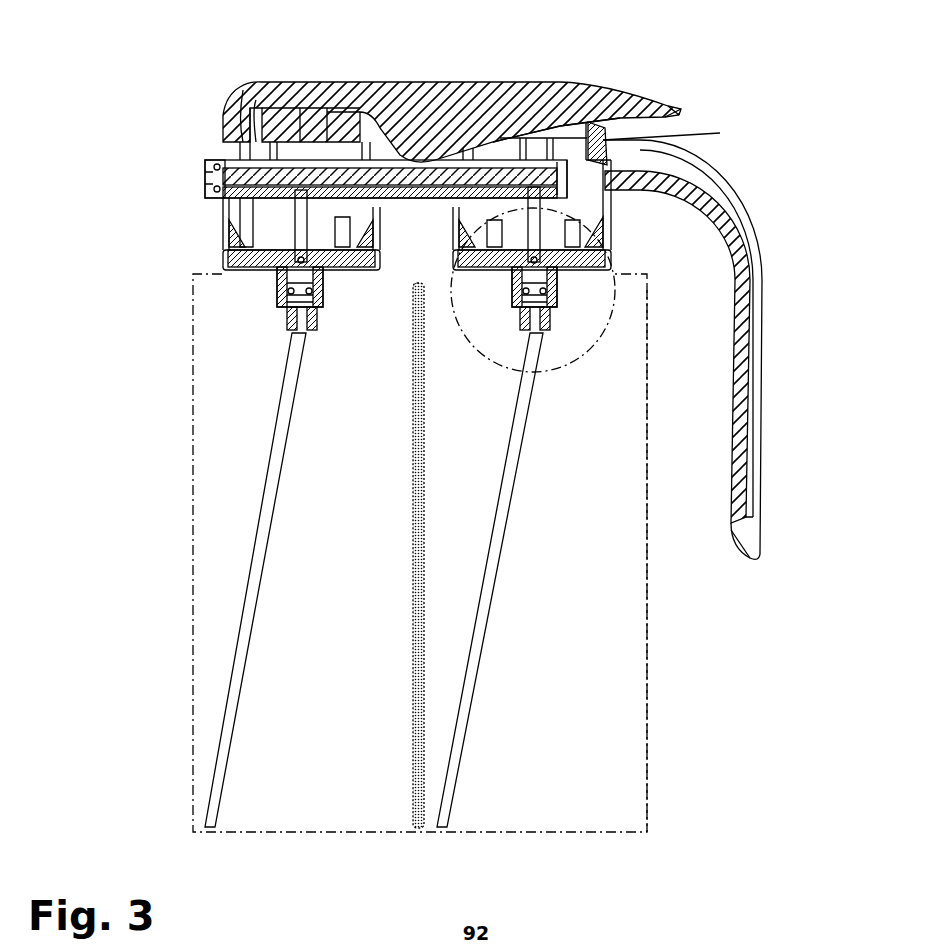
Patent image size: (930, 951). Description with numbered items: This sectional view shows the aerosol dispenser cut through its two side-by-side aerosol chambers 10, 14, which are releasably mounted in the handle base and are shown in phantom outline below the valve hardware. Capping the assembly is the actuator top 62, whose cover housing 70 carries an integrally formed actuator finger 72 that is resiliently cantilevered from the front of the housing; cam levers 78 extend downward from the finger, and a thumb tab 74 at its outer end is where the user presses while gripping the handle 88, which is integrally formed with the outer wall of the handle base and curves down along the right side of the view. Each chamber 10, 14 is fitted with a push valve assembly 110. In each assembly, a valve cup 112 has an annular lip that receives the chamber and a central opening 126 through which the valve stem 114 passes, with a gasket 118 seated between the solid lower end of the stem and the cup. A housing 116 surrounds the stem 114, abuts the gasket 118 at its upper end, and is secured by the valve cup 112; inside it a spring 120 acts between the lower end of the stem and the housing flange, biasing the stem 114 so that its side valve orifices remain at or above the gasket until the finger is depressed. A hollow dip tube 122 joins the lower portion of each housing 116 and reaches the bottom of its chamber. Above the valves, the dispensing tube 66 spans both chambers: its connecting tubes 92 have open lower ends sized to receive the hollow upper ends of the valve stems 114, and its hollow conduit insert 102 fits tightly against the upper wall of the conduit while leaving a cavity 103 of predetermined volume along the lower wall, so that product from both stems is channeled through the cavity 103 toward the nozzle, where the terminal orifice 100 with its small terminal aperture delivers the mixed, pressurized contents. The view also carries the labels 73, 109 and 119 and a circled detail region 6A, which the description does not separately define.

The aerosol chamber 10 is at (200, 676).
The aerosol chamber 14 is at (637, 700).
The detail view circle 6A is at (598, 350).
The actuator top 62 is at (222, 107).
The dispensing tube 66 is at (553, 152).
The cover housing 70 is at (228, 118).
The actuator finger 72 is at (632, 103).
The handle upper edge 73 is at (603, 140).
The thumb tab 74 is at (667, 113).
The cam lever 78 is at (386, 125).
The handle 88 is at (757, 316).
The connecting tube 92 is at (525, 195).
The terminal orifice 100 is at (207, 167).
The hollow conduit insert 102 is at (233, 167).
The cavity 103 is at (222, 190).
The center tube 109 is at (413, 770).
The push valve assembly 110 is at (277, 296).
The valve cup 112 is at (278, 268).
The valve stem 114 is at (297, 233).
The housing 116 is at (288, 327).
The gasket 118 is at (280, 278).
The cap inner wall 119 is at (558, 283).
The spring 120 is at (281, 300).
The dip tube 122 is at (250, 590).
The opening 126 is at (228, 262).